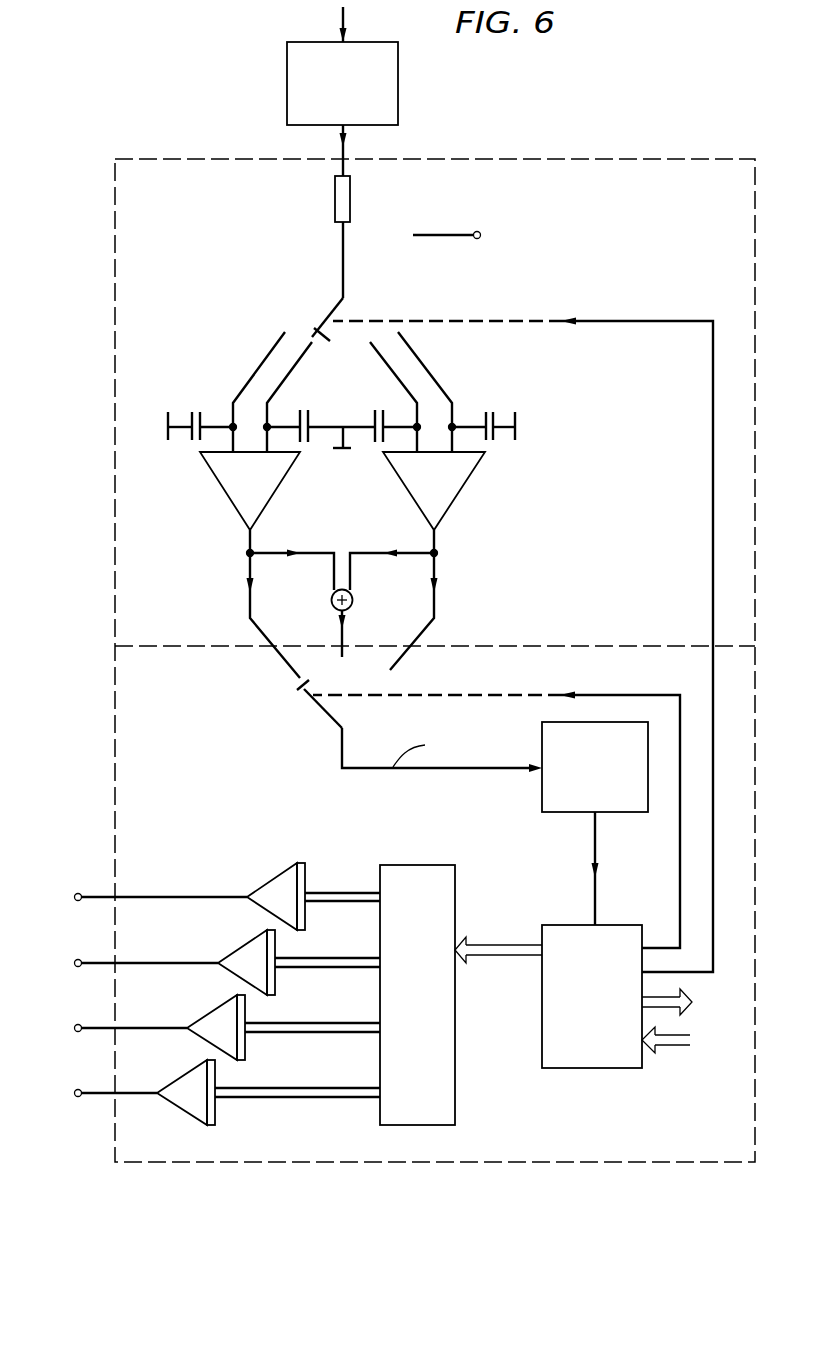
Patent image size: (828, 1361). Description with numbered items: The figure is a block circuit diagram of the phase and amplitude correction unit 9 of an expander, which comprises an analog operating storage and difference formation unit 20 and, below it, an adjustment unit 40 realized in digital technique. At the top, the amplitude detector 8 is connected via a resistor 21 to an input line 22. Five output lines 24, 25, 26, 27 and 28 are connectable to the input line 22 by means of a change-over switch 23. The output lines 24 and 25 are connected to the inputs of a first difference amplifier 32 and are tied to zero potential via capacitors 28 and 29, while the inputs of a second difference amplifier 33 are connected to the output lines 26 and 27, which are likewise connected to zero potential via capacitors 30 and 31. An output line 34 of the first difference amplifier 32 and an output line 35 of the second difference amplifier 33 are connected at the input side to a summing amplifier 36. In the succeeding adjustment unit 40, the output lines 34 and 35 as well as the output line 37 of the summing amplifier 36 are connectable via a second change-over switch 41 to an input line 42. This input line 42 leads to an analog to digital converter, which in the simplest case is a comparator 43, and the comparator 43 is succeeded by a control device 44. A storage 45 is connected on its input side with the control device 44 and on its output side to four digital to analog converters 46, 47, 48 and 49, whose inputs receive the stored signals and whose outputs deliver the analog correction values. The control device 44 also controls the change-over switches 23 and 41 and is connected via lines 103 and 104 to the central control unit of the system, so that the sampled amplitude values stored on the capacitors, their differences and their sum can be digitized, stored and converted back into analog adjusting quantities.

The amplitude detector 8 is at (367, 125).
The phase and amplitude correction unit 9 is at (593, 158).
The storage and difference formation unit 20 is at (435, 412).
The resistor 21 is at (335, 206).
The input line 22 is at (342, 287).
The change-over switch 23 is at (332, 313).
The output line 24 is at (275, 346).
The output line 25 is at (282, 383).
The output line 26 is at (402, 383).
The output line 27 is at (413, 352).
The output line / capacitor 28 is at (423, 235).
The capacitor 29 is at (311, 393).
The capacitor 30 is at (378, 410).
The capacitor 31 is at (488, 407).
The first difference amplifier 32 is at (225, 497).
The second difference amplifier 33 is at (450, 508).
The output line 34 is at (248, 608).
The output line 35 is at (436, 605).
The summing amplifier 36 is at (353, 600).
The output line 37 is at (339, 638).
The adjustment unit 40 is at (145, 681).
The change-over switch 41 is at (318, 705).
The input line 42 is at (450, 770).
The comparator 43 is at (542, 797).
The control device 44 is at (542, 1037).
The storage 45 is at (402, 863).
The digital to analog converter 46 is at (278, 873).
The digital to analog converter 47 is at (250, 942).
The digital to analog converter 48 is at (220, 1005).
The digital to analog converter 49 is at (190, 1070).
The line 103 is at (660, 1047).
The line 104 is at (660, 1008).